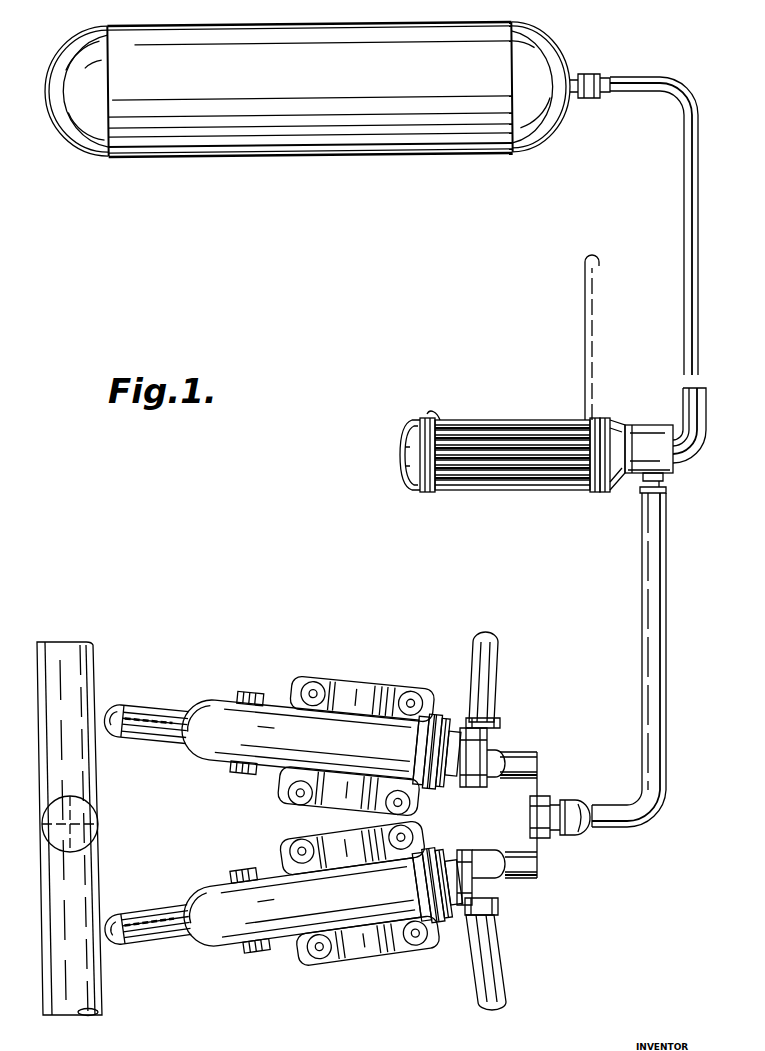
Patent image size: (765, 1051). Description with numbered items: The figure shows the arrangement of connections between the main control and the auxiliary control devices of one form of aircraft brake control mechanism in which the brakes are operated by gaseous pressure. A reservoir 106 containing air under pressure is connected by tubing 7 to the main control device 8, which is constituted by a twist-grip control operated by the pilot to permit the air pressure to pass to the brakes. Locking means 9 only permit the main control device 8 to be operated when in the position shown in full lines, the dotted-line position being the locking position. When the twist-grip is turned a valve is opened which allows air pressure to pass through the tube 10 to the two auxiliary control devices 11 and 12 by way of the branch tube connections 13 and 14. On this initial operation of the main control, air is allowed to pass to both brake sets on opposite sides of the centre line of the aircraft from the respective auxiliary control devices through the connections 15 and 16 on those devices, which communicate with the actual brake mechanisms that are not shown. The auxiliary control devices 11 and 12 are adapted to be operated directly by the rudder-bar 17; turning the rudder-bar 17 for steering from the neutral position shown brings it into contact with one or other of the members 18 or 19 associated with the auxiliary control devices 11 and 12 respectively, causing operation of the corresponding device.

The reservoir 106 is at (395, 154).
The tubing 7 is at (683, 194).
The main control device 8 is at (470, 492).
The locking means 9 is at (520, 422).
The tube 10 is at (642, 633).
The auxiliary control device 11 is at (221, 708).
The auxiliary control device 12 is at (226, 930).
The branch tube connection 13 is at (505, 780).
The branch tube connection 14 is at (520, 852).
The connection 15 is at (473, 670).
The connection 16 is at (500, 941).
The rudder-bar 17 is at (100, 858).
The member 18 is at (143, 704).
The member 19 is at (137, 941).